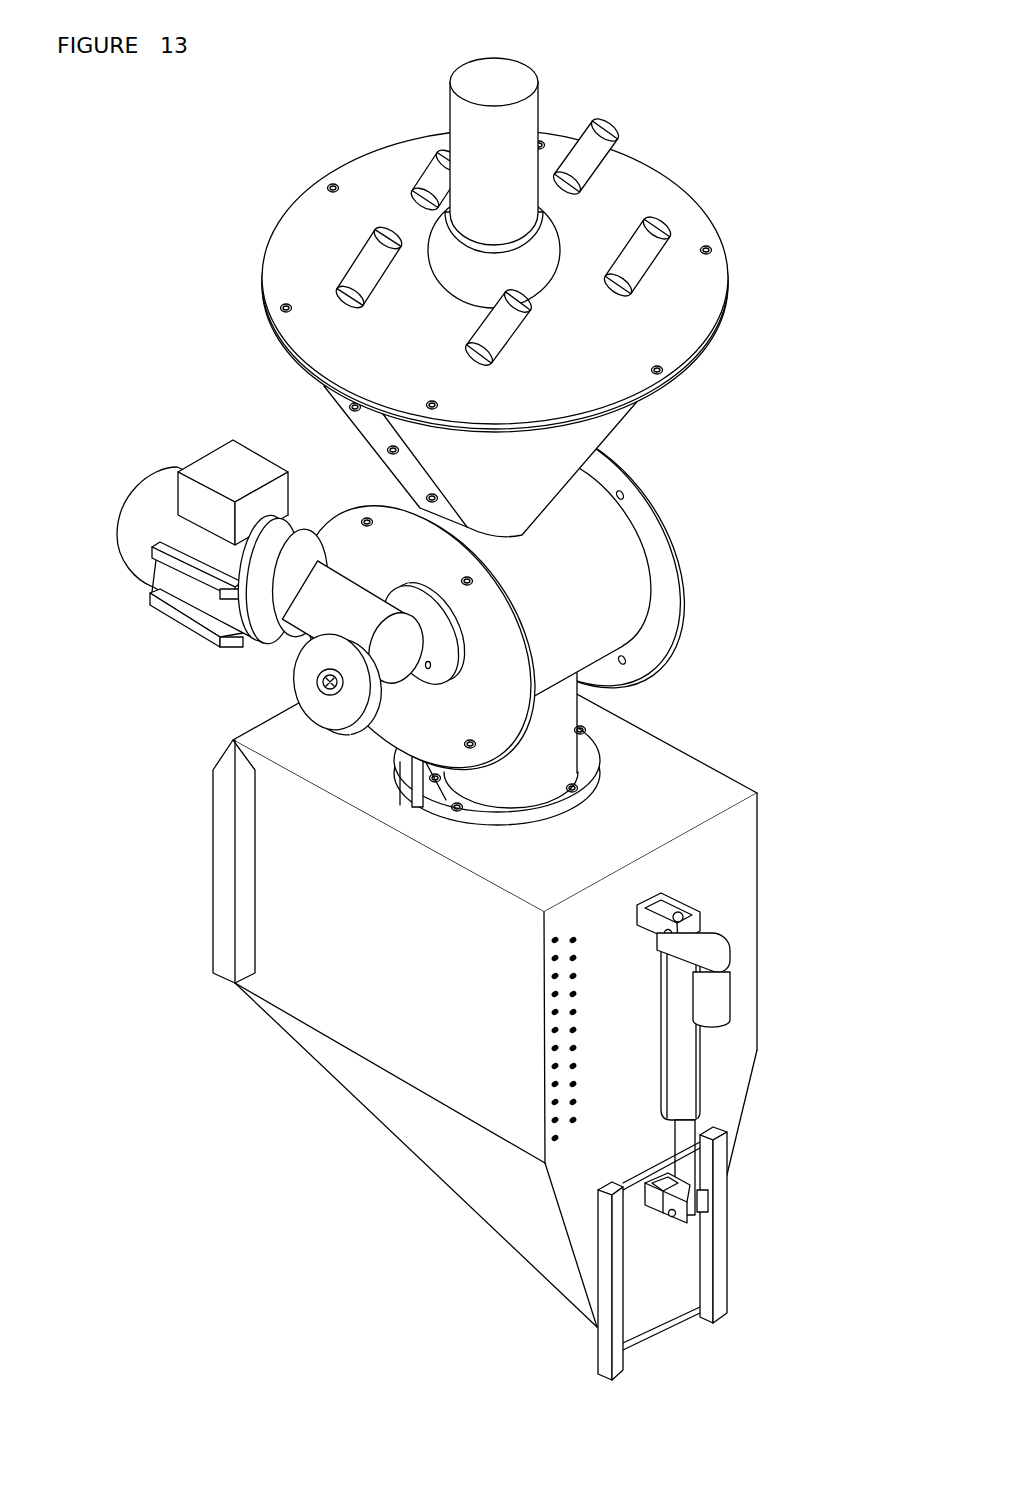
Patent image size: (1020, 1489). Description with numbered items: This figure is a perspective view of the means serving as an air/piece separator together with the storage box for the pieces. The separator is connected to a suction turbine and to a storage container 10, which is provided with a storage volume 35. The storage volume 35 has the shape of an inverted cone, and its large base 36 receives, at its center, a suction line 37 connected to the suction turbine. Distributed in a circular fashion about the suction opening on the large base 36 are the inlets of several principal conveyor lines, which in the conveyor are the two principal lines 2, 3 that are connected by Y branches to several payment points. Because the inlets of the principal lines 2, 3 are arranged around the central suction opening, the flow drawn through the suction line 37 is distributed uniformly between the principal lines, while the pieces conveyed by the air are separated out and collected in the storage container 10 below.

The suction line 37 is at (488, 82).
The principal line 2 is at (588, 152).
The principal line 3 is at (368, 265).
The large base 36 is at (678, 317).
The storage volume 35 is at (592, 428).
The storage container 10 is at (687, 857).